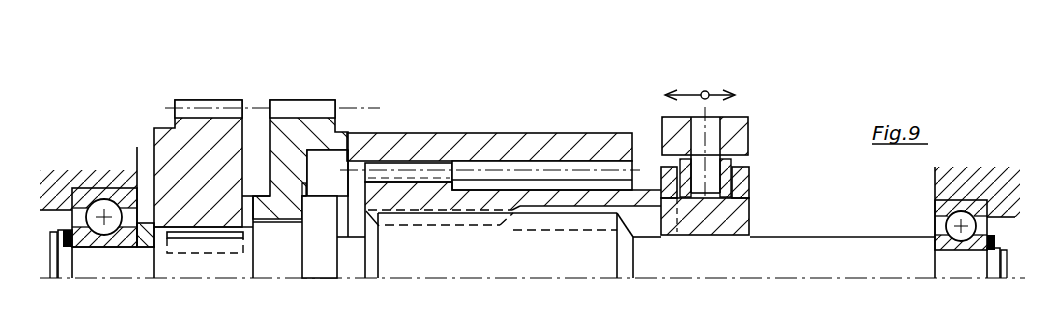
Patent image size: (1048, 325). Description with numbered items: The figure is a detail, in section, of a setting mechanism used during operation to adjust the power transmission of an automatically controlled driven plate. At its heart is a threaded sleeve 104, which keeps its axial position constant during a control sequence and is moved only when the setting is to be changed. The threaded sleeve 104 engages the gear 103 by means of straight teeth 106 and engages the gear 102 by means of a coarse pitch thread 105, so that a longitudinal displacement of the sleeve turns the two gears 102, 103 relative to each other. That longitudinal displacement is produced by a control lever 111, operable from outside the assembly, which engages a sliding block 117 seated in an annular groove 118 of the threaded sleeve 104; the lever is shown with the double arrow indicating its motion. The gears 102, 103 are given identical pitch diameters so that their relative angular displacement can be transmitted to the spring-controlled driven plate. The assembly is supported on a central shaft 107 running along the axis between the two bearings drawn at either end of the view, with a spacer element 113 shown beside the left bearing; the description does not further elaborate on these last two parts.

The gear 102 is at (175, 150).
The gear 103 is at (400, 146).
The threaded sleeve 104 is at (567, 197).
The coarse pitch thread 105 is at (438, 218).
The straight teeth 106 is at (437, 168).
The shaft 107 is at (813, 268).
The control lever 111 is at (673, 135).
The spacer ring 113 is at (151, 274).
The sliding block 117 is at (728, 165).
The annular groove 118 is at (737, 187).